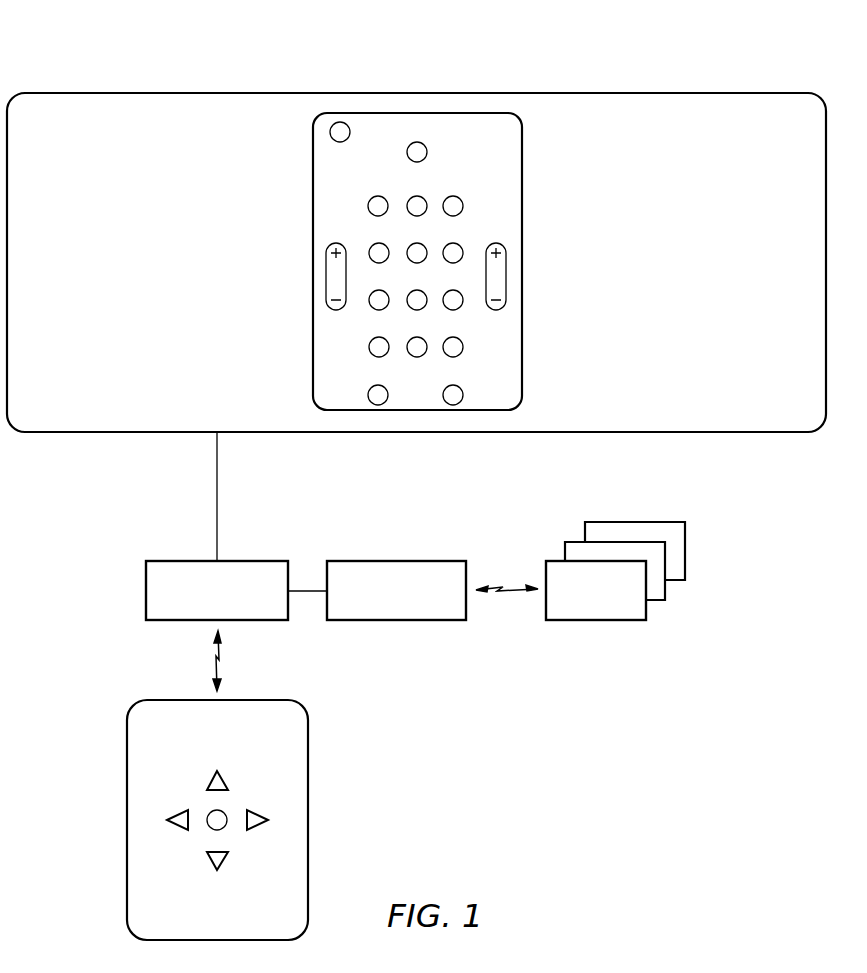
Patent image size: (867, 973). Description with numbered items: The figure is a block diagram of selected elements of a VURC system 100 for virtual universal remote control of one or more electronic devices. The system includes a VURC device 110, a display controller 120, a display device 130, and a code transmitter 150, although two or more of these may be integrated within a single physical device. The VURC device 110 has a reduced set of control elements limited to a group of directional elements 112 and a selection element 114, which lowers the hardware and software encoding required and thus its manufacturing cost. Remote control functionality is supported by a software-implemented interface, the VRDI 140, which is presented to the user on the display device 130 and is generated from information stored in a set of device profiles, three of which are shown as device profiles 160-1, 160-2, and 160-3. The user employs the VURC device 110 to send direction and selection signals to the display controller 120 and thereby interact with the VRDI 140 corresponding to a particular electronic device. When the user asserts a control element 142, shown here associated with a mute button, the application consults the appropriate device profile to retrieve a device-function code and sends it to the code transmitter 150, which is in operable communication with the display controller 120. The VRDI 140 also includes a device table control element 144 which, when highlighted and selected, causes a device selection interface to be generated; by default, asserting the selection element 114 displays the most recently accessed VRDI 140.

The VURC system 100 is at (152, 46).
The display device 130 is at (640, 93).
The VRDI 140 is at (522, 357).
The device table control element 144 is at (340, 130).
The control element 142 is at (453, 405).
The display controller 120 is at (146, 598).
The code transmitter 150 is at (397, 621).
The device profile 160-1 is at (596, 621).
The device profile 160-2 is at (666, 591).
The device profile 160-3 is at (686, 552).
The VURC device 110 is at (127, 823).
The directional elements 112 is at (225, 778).
The selection element 114 is at (207, 812).